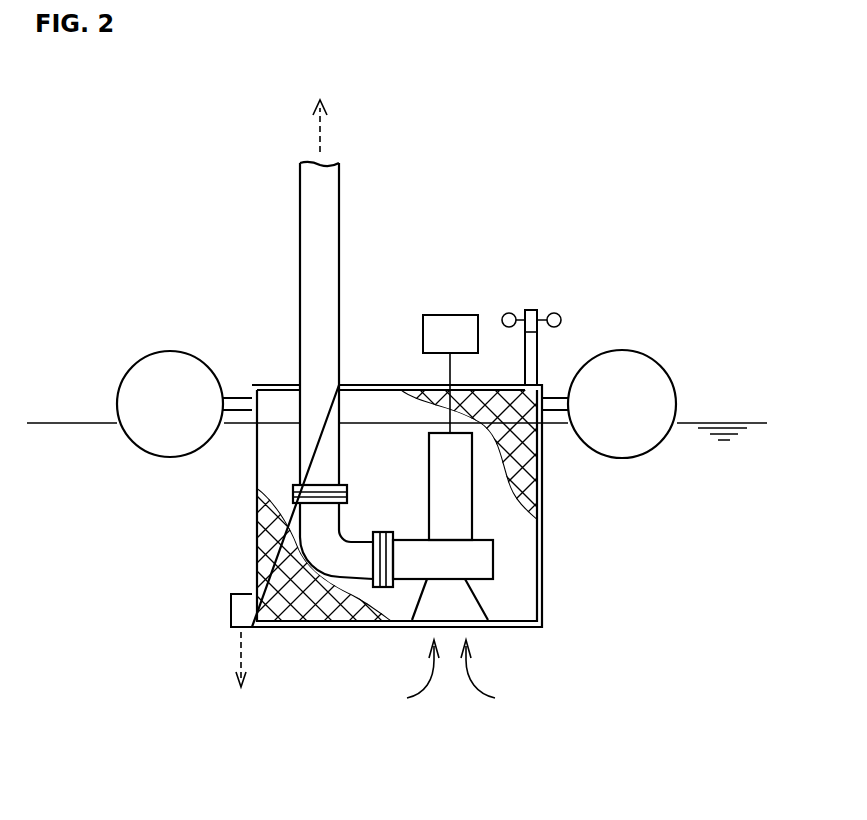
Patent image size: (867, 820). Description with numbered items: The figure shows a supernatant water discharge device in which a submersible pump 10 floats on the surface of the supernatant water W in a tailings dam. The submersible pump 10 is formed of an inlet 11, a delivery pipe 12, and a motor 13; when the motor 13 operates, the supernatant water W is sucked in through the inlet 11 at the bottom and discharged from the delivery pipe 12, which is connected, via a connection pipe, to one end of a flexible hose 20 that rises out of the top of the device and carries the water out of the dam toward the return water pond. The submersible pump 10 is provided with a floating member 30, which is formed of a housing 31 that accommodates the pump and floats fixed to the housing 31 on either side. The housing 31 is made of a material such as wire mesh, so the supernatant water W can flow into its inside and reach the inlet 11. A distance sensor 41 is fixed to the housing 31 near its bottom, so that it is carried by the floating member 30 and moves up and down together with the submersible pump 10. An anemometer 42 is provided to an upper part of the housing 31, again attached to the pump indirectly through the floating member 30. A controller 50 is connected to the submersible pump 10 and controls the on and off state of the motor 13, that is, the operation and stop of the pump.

The submersible pump 10 is at (619, 513).
The inlet 11 is at (467, 598).
The delivery pipe 12 is at (480, 558).
The motor 13 is at (460, 518).
The flexible hose 20 is at (323, 210).
The floating member 30 is at (152, 270).
The housing 31 is at (271, 383).
The distance sensor 41 is at (230, 612).
The anemometer 42 is at (532, 310).
The controller 50 is at (450, 374).
The supernatant water W is at (380, 762).